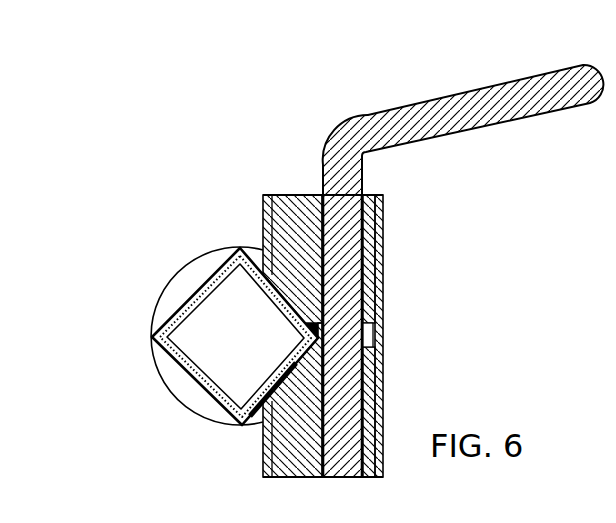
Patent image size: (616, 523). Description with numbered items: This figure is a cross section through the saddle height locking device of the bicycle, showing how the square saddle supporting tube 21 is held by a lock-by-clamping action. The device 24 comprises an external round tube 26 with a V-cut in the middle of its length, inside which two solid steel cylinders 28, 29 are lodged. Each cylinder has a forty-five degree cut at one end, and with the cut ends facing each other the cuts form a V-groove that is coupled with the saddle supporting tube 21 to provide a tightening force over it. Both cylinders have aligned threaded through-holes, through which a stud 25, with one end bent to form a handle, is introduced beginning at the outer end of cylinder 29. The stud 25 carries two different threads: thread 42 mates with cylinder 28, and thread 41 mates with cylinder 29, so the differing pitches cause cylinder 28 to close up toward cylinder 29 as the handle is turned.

The saddle supporting tube 21 is at (193, 303).
The clamp assembly 24 is at (247, 112).
The stud 25 is at (508, 123).
The external round tube 26 is at (387, 300).
The solid steel cylinder 28 is at (300, 422).
The solid steel cylinder 29 is at (300, 230).
The thread 41 is at (377, 237).
The thread 42 is at (375, 377).